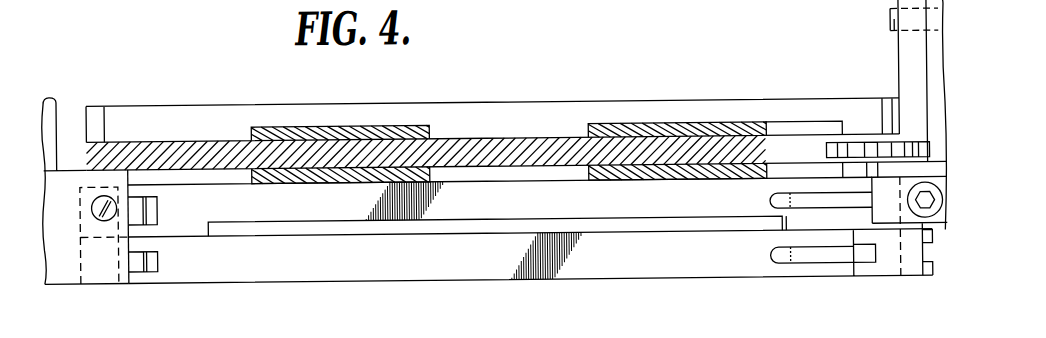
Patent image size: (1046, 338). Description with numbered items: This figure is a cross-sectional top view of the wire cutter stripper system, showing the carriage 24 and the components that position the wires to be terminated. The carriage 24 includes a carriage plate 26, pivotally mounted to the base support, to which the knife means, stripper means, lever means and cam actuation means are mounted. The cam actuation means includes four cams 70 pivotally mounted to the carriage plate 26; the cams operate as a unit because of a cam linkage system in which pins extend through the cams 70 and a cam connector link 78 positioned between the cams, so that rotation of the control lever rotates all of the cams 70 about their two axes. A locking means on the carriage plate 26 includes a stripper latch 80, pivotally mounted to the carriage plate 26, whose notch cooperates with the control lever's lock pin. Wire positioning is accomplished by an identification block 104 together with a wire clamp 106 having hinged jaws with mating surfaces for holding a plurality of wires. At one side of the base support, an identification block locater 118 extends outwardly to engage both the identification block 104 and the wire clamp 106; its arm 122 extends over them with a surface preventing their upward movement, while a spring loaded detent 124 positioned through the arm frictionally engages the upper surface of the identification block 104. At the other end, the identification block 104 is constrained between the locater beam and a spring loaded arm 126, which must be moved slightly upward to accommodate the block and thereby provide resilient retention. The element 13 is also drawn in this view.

The nut 13 is at (928, 218).
The carriage 24 is at (512, 141).
The carriage plate 26 is at (188, 142).
The cams 70 is at (345, 129).
The cam connector link 78 is at (452, 332).
The stripper latch 80 is at (878, 149).
The identification block 104 is at (702, 206).
The wire clamp 106 is at (622, 268).
The identification block locater 118 is at (65, 277).
The arm 122 is at (118, 275).
The spring loaded detent 124 is at (108, 223).
The spring loaded arm 126 is at (885, 218).